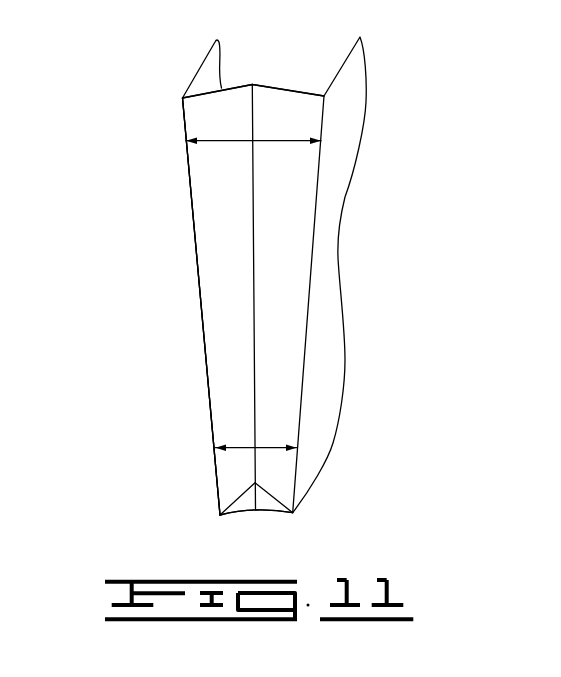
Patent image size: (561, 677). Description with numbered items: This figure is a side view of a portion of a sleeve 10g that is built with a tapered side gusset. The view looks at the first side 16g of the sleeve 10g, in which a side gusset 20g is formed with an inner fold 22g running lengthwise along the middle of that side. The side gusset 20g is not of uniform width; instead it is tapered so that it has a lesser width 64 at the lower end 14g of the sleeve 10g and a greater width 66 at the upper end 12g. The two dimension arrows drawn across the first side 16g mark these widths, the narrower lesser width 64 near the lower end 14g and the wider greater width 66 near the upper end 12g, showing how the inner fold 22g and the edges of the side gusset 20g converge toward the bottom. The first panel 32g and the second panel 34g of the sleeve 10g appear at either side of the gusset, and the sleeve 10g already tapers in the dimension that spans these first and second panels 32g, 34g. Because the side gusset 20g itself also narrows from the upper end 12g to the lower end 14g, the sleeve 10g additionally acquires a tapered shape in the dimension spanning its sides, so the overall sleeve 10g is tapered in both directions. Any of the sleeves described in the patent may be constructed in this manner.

The sleeve 10g is at (177, 322).
The upper end 12g is at (238, 85).
The lower end 14g is at (272, 512).
The first side 16g is at (225, 348).
The side gusset 20g is at (192, 224).
The inner fold 22g is at (254, 309).
The first panel 32g is at (330, 258).
The second panel 34g is at (196, 70).
The lesser width 64 is at (268, 448).
The greater width 66 is at (272, 141).